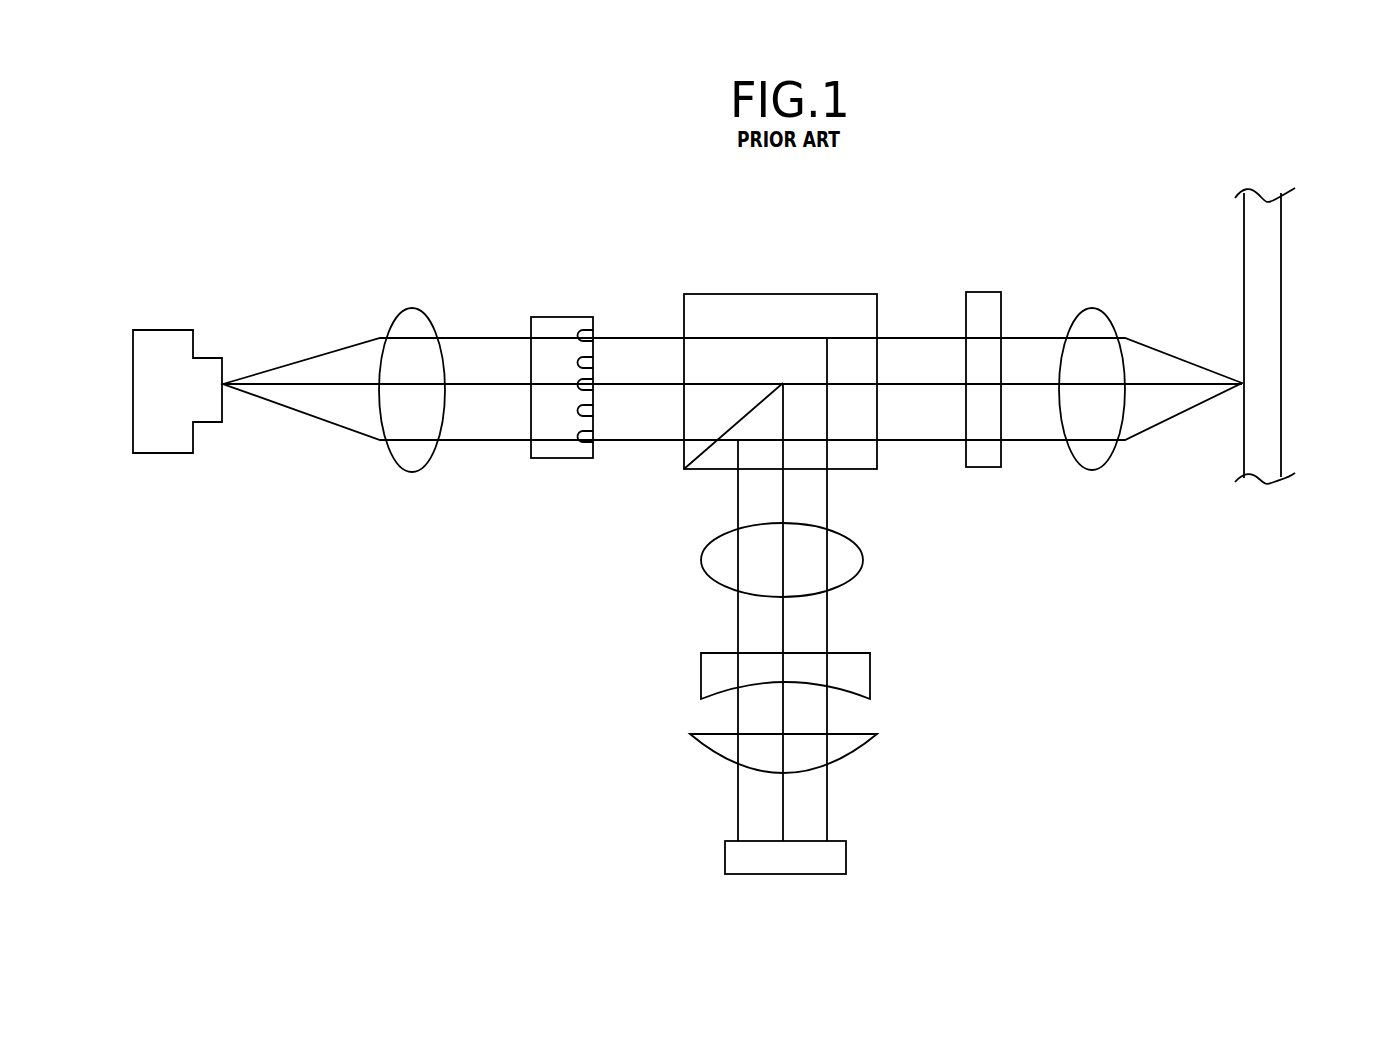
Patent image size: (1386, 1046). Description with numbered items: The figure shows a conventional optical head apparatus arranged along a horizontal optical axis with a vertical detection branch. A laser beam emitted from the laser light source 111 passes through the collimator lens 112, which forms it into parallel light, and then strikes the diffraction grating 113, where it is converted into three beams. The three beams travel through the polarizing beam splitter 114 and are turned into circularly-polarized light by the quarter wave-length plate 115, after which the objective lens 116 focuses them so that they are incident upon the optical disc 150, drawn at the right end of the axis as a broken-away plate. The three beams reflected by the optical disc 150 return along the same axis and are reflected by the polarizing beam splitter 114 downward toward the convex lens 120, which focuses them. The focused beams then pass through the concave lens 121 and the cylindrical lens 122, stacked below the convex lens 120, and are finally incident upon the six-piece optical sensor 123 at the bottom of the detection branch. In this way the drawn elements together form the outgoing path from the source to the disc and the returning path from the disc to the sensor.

The laser light source 111 is at (153, 330).
The collimator lens 112 is at (417, 309).
The diffraction grating 113 is at (546, 317).
The polarizing beam splitter 114 is at (806, 294).
The quarter wave-length plate 115 is at (978, 292).
The objective lens 116 is at (1088, 308).
The optical disc 150 is at (1281, 298).
The convex lens 120 is at (863, 558).
The concave lens 121 is at (870, 673).
The cylindrical lens 122 is at (873, 737).
The six-piece optical sensor 123 is at (846, 852).